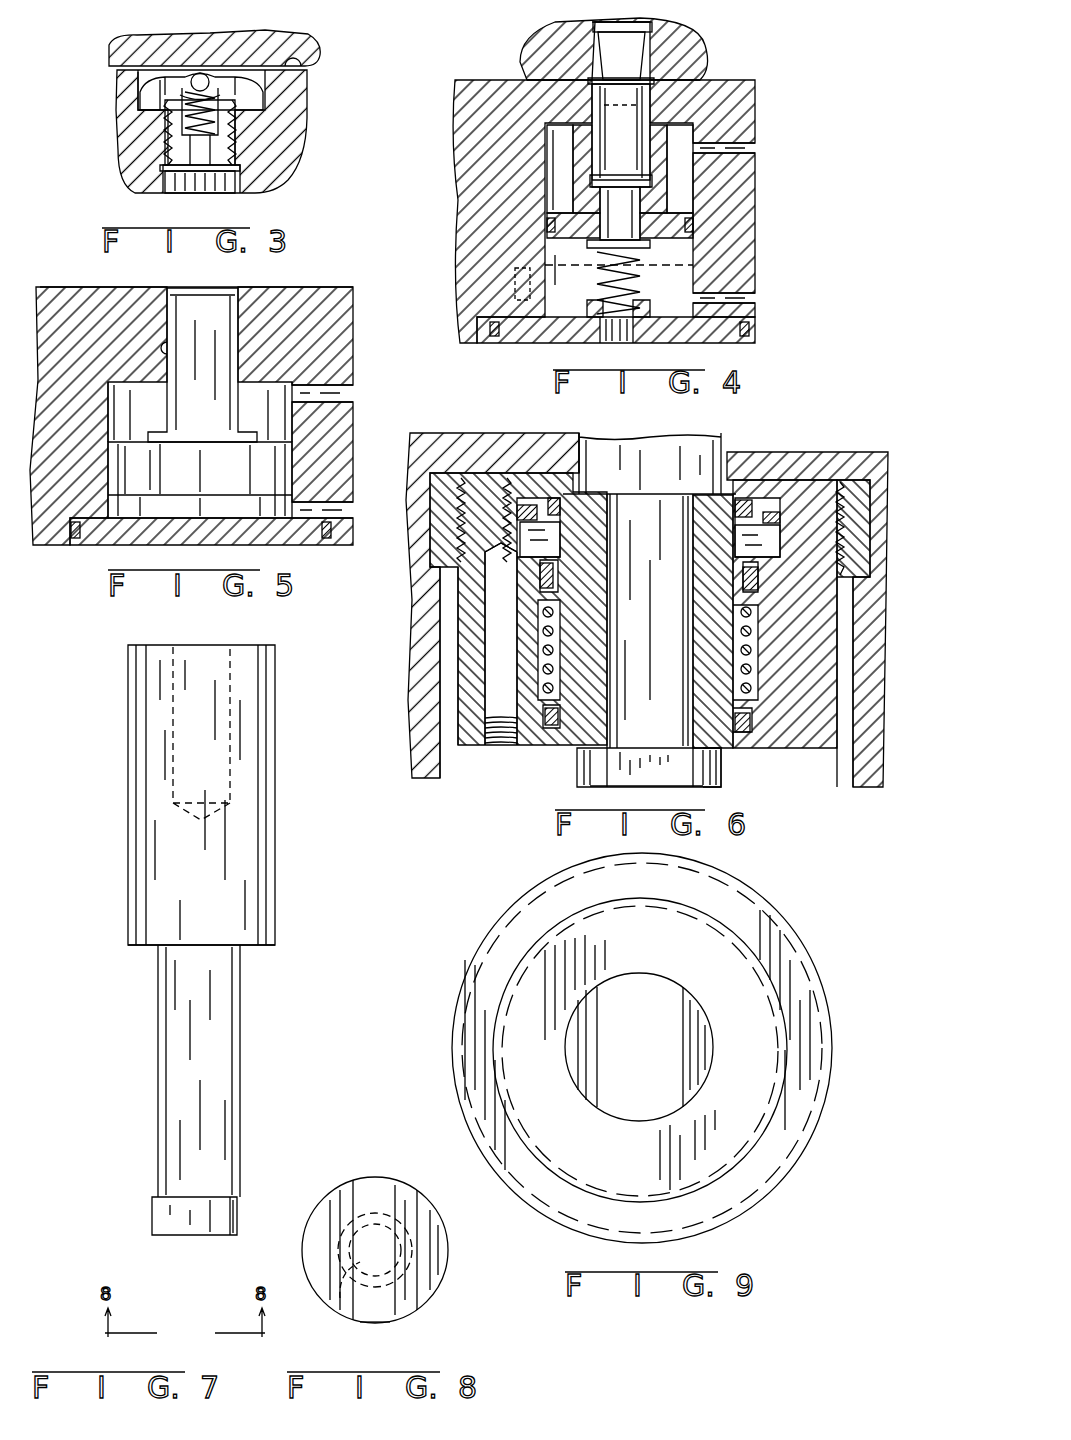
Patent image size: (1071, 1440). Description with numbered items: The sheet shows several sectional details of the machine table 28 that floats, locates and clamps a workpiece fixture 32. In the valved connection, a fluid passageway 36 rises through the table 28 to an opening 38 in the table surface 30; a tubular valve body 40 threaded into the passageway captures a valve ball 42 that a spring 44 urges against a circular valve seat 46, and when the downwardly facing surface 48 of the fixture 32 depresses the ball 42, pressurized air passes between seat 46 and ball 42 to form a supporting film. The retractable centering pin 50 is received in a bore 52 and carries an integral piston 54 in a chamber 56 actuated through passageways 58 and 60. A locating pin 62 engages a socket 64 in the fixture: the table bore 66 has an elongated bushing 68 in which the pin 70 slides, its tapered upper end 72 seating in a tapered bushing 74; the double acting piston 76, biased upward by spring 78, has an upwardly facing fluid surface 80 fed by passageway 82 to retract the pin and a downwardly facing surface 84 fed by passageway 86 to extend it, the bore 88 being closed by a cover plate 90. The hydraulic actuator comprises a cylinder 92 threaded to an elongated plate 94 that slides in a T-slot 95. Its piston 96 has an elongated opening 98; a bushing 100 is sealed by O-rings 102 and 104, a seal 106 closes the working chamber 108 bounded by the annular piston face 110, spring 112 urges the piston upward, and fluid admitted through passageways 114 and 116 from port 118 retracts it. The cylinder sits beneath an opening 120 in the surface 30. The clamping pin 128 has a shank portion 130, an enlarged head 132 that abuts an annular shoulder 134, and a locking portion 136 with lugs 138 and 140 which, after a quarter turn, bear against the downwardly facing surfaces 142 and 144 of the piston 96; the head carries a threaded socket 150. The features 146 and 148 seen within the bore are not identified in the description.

In FIG. 3, the table 28 is at (278, 160).
In FIG. 5, the table 28 is at (330, 298).
In FIG. 4, the table 28 is at (755, 230).
In FIG. 6, the table 28 is at (425, 672).
In FIG. 3, the table surface 30 is at (297, 64).
In FIG. 5, the table surface 30 is at (88, 288).
In FIG. 3, the fixture 32 is at (300, 44).
In FIG. 4, the fixture 32 is at (680, 33).
In FIG. 3, the fluid passageway 36 is at (183, 195).
In FIG. 3, the opening 38 is at (253, 92).
In FIG. 3, the valve body 40 is at (165, 88).
In FIG. 3, the valve ball 42 is at (195, 67).
In FIG. 3, the spring 44 is at (203, 193).
In FIG. 3, the circular valve seat 46 is at (198, 67).
In FIG. 3, the downwardly facing surface 48 is at (112, 88).
In FIG. 4, the downwardly facing surface 48 is at (510, 85).
In FIG. 5, the main centering pin 50 is at (205, 305).
In FIG. 5, the bore 52 is at (170, 347).
In FIG. 5, the piston 54 is at (115, 470).
In FIG. 5, the chamber 56 is at (268, 406).
In FIG. 5, the passageway 58 is at (355, 510).
In FIG. 5, the passageway 60 is at (355, 395).
In FIG. 4, the locating pin 62 is at (660, 113).
In FIG. 4, the socket 64 is at (643, 52).
In FIG. 4, the bore 66 is at (592, 102).
In FIG. 4, the elongated bushing 68 is at (653, 82).
In FIG. 4, the pin 70 is at (600, 137).
In FIG. 4, the tapered upper end 72 is at (607, 70).
In FIG. 4, the tapered bushing 74 is at (597, 48).
In FIG. 4, the double acting piston 76 is at (677, 220).
In FIG. 4, the spring 78 is at (633, 295).
In FIG. 4, the upwardly facing fluid surface 80 is at (567, 210).
In FIG. 4, the passageway 82 is at (757, 148).
In FIG. 4, the downwardly facing surface 84 is at (667, 240).
In FIG. 4, the passageway 86 is at (755, 294).
In FIG. 4, the bore 88 is at (565, 305).
In FIG. 4, the cover plate 90 is at (700, 343).
In FIG. 9, the hydraulic cylinder 92 is at (802, 955).
In FIG. 6, the elongated plate 94 is at (858, 480).
In FIG. 6, the T-slot 95 is at (430, 548).
In FIG. 6, the piston 96 is at (602, 686).
In FIG. 9, the piston 96 is at (707, 1078).
In FIG. 6, the elongated opening 98 is at (612, 720).
In FIG. 6, the bushing 100 is at (772, 485).
In FIG. 9, the bushing 100 is at (738, 1127).
In FIG. 6, the O-ring 102 is at (745, 500).
In FIG. 6, the O-ring 104 is at (768, 512).
In FIG. 6, the seal 106 is at (745, 578).
In FIG. 6, the working chamber 108 is at (745, 532).
In FIG. 6, the annular piston face 110 is at (525, 550).
In FIG. 6, the spring 112 is at (755, 700).
In FIG. 6, the passageway 114 is at (553, 505).
In FIG. 6, the passageway 116 is at (513, 606).
In FIG. 6, the port 118 is at (497, 740).
In FIG. 6, the opening 120 is at (583, 462).
In FIG. 6, the pin 128 is at (713, 760).
In FIG. 7, the pin 128 is at (290, 883).
In FIG. 7, the shank portion 130 is at (157, 1073).
In FIG. 8, the shank portion 130 is at (392, 1208).
In FIG. 6, the enlarged head 132 is at (690, 455).
In FIG. 7, the enlarged head 132 is at (276, 746).
In FIG. 8, the enlarged head 132 is at (437, 1238).
In FIG. 6, the annular shoulder 134 is at (600, 494).
In FIG. 6, the locking portion 136 is at (628, 789).
In FIG. 7, the locking portion 136 is at (248, 1212).
In FIG. 6, the lug 138 is at (577, 777).
In FIG. 7, the lug 138 is at (185, 1222).
In FIG. 8, the lug 138 is at (358, 1185).
In FIG. 6, the lug 140 is at (722, 780).
In FIG. 8, the lug 140 is at (397, 1322).
In FIG. 6, the downwardly facing surface 142 is at (577, 762).
In FIG. 6, the downwardly facing surface 144 is at (703, 760).
In FIG. 9, the flat 146 is at (600, 1030).
In FIG. 9, the flat 148 is at (682, 1057).
In FIG. 7, the threaded socket 150 is at (170, 665).
In FIG. 8, the threaded socket 150 is at (345, 1305).